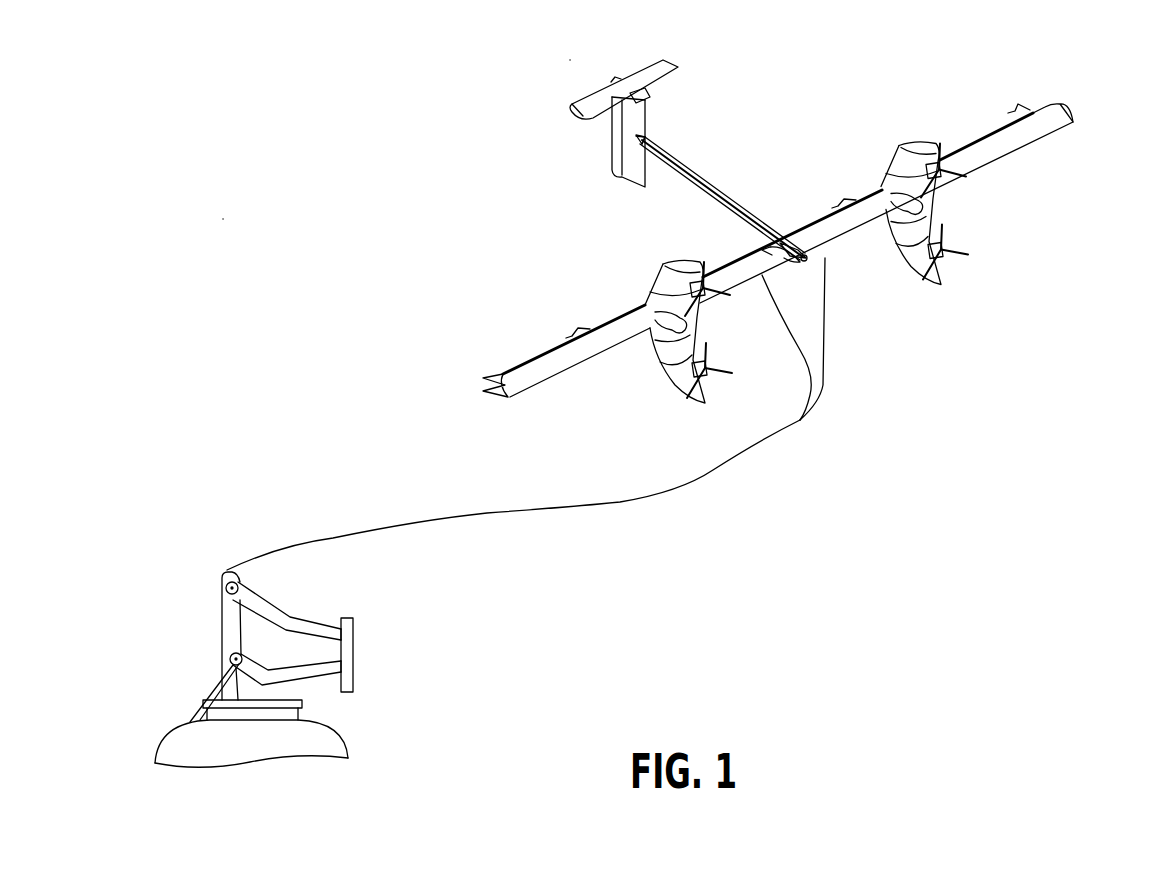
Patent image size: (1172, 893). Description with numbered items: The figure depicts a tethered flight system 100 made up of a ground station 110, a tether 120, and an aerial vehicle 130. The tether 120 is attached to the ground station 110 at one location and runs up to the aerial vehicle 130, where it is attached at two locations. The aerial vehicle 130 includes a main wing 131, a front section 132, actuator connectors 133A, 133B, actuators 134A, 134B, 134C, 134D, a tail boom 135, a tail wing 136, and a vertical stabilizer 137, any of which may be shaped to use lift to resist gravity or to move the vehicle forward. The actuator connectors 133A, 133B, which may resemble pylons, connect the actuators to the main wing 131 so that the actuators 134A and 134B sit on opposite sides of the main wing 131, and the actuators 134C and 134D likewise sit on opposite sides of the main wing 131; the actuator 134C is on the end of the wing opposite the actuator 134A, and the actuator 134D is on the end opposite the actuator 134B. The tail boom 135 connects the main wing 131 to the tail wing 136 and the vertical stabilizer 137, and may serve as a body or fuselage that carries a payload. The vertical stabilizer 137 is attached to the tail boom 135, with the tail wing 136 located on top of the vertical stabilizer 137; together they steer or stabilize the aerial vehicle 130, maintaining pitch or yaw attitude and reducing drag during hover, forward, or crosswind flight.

The tethered flight system 100 is at (222, 220).
The ground station 110 is at (230, 626).
The tether 120 is at (334, 539).
The aerial vehicle 130 is at (1150, 88).
The main wing 131 is at (838, 225).
The front section 132 is at (800, 264).
The actuator connector 133A is at (881, 207).
The actuator connector 133B is at (655, 268).
The actuator 134A is at (952, 188).
The actuator 134B is at (952, 268).
The actuator 134C is at (713, 298).
The actuator 134D is at (715, 377).
The tail boom 135 is at (702, 178).
The tail wing 136 is at (682, 62).
The vertical stabilizer 137 is at (635, 178).